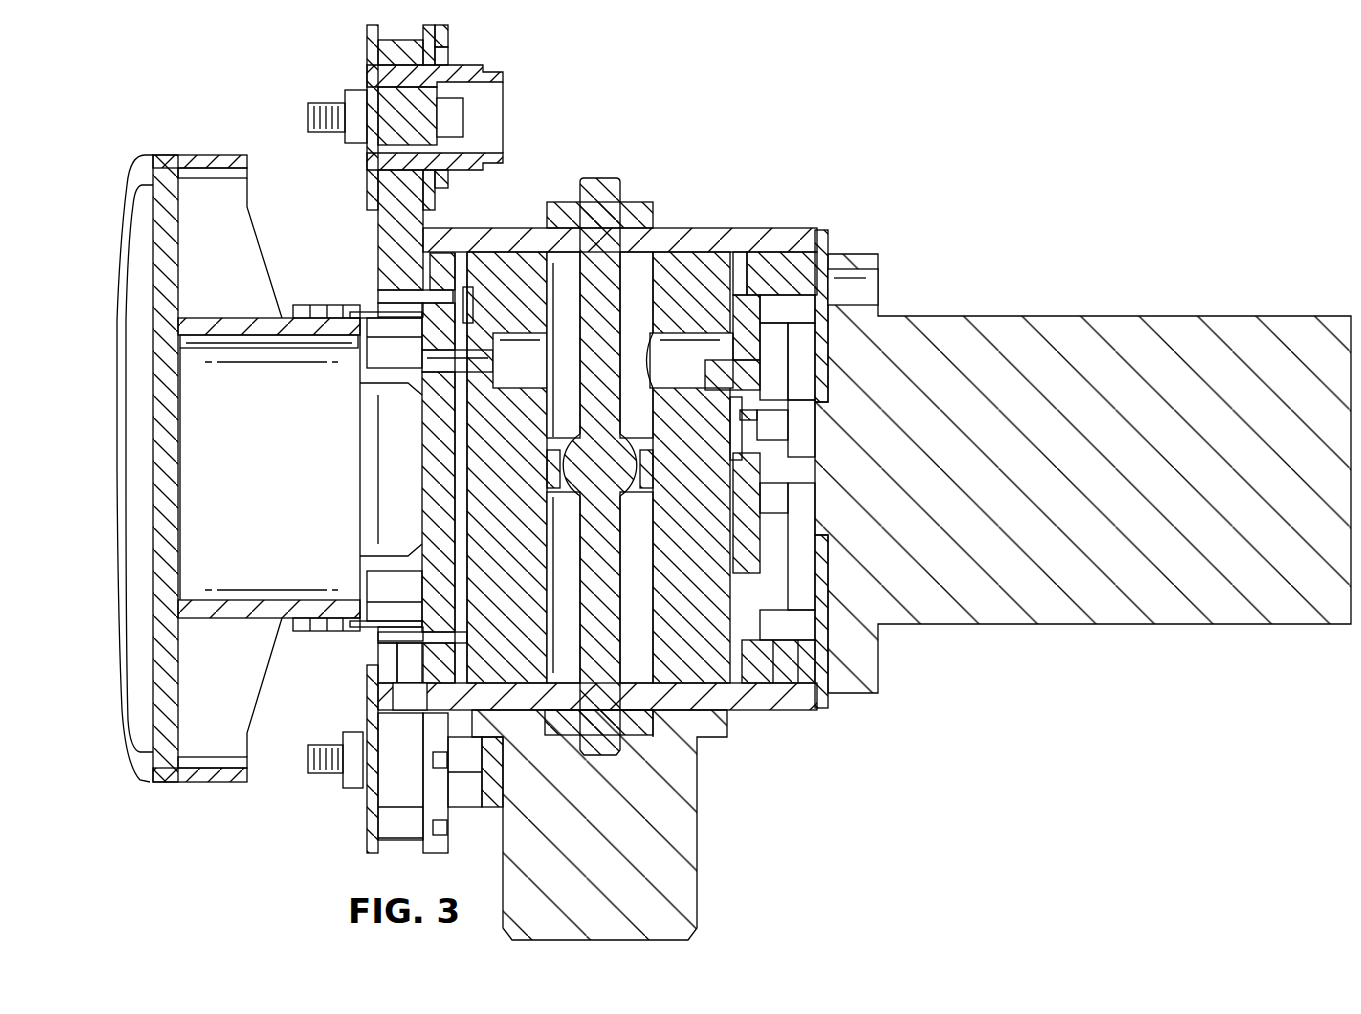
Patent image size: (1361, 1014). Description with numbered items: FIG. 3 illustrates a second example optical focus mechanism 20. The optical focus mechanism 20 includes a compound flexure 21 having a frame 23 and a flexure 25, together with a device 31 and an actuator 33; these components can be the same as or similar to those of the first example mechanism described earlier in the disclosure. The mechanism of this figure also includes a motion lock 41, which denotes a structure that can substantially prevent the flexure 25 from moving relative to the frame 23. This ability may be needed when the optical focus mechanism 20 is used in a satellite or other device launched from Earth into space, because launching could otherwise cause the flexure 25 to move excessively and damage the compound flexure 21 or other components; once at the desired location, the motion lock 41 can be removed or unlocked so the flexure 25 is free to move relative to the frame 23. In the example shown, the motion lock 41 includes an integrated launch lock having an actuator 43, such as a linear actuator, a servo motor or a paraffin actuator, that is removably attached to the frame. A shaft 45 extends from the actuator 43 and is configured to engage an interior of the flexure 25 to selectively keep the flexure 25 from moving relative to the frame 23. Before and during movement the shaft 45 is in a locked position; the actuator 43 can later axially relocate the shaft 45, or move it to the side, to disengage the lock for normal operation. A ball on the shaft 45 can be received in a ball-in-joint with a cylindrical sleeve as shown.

The optical focus mechanism 20 is at (1078, 92).
The compound flexure 21 is at (742, 145).
The frame 23 is at (762, 232).
The flexure 25 is at (705, 262).
The device 31 is at (175, 124).
The actuator 33 is at (1118, 284).
The motion lock 41 is at (726, 853).
The actuator 43 is at (688, 900).
The shaft 45 is at (600, 188).